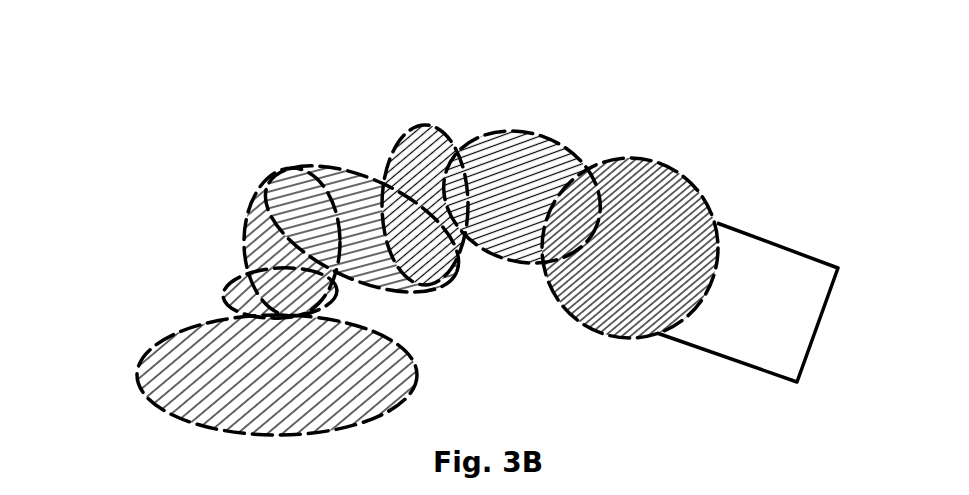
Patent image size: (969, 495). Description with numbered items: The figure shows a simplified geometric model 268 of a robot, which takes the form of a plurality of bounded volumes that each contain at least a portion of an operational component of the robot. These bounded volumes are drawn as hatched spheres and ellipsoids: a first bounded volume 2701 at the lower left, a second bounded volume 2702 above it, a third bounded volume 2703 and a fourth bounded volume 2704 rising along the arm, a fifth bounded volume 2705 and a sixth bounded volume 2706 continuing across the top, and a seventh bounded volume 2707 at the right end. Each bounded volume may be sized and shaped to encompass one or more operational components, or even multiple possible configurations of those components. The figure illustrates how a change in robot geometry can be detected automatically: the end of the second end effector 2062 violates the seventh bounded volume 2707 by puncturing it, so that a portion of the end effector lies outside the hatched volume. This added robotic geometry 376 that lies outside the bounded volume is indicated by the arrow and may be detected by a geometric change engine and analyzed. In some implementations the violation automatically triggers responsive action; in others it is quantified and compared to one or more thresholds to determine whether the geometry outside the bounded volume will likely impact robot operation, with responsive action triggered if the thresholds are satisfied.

The first bounded volume 2701 is at (167, 350).
The second bounded volume 2702 is at (242, 303).
The third bounded volume 2703 is at (272, 223).
The fourth bounded volume 2704 is at (378, 181).
The fifth bounded volume 2705 is at (440, 143).
The sixth bounded volume 2706 is at (510, 162).
The seventh bounded volume 2707 is at (667, 193).
The geometric model 268 is at (118, 211).
The second end effector 2062 is at (764, 193).
The added robotic geometry 376 is at (743, 340).